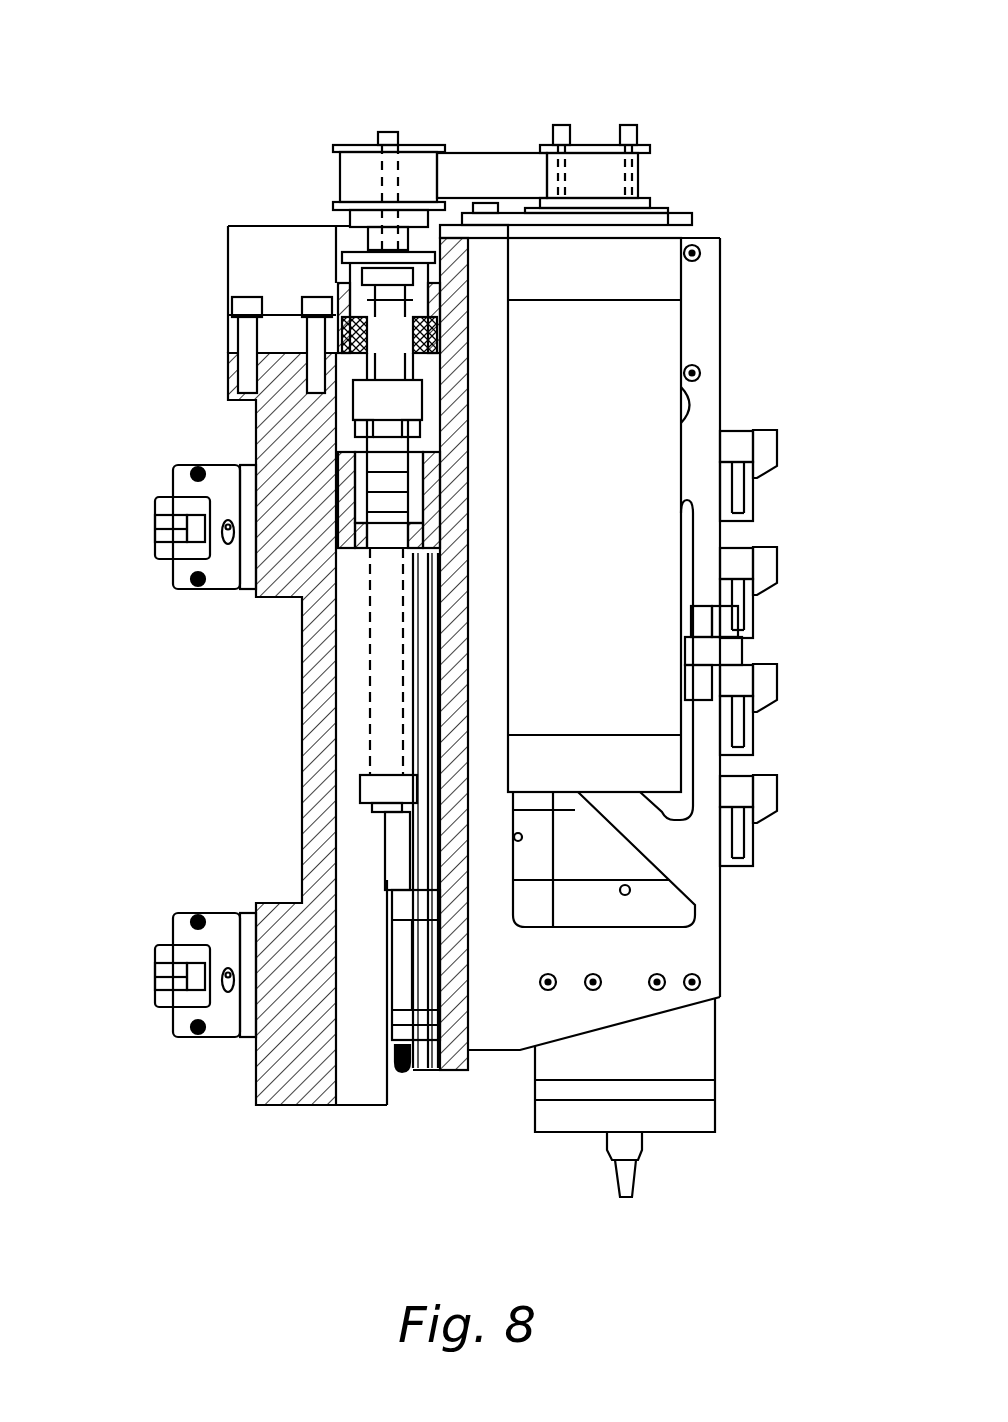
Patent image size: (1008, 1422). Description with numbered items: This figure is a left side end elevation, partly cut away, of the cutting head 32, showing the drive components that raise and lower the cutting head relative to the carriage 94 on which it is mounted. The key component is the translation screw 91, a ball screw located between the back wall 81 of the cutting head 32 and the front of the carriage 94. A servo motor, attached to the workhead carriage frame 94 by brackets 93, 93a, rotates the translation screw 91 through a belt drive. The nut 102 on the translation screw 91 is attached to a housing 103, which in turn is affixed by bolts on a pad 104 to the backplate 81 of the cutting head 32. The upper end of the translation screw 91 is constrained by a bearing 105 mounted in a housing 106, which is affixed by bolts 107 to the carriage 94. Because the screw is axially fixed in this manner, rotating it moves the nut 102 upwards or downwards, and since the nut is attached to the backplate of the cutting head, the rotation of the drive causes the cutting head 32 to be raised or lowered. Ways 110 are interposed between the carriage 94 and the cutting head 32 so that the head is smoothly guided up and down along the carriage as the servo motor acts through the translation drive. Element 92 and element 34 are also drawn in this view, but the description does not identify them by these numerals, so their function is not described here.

The cutting head 32 is at (740, 358).
The nozzle block 34 is at (779, 1104).
The back wall 81 is at (452, 242).
The translation screw 91 is at (388, 682).
The air cylinder 92 is at (355, 150).
The bracket 93 is at (680, 213).
The bracket 93a is at (647, 277).
The carriage 94 is at (258, 383).
The nut 102 is at (353, 442).
The housing 103 is at (343, 548).
The pad 104 is at (445, 498).
The bearing 105 is at (338, 278).
The housing 106 is at (336, 280).
The bolts 107 is at (308, 298).
The ways 110 is at (423, 1072).